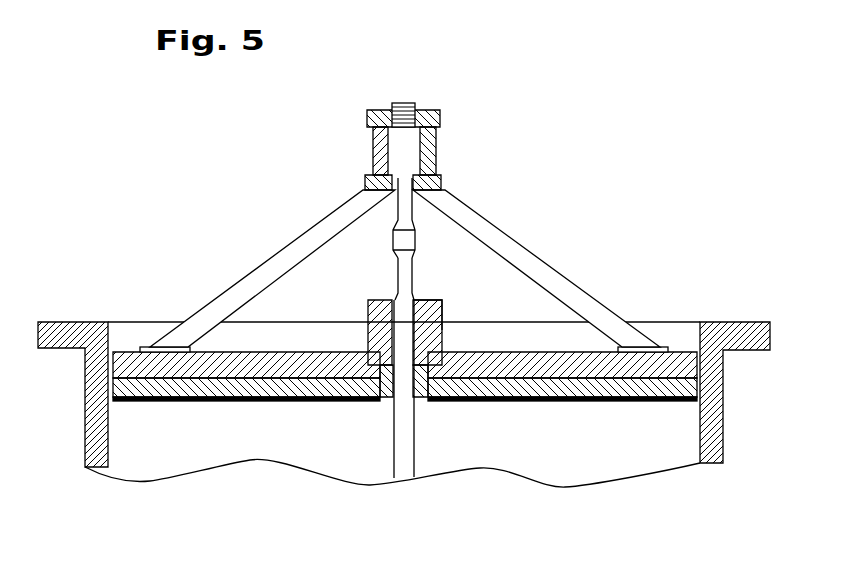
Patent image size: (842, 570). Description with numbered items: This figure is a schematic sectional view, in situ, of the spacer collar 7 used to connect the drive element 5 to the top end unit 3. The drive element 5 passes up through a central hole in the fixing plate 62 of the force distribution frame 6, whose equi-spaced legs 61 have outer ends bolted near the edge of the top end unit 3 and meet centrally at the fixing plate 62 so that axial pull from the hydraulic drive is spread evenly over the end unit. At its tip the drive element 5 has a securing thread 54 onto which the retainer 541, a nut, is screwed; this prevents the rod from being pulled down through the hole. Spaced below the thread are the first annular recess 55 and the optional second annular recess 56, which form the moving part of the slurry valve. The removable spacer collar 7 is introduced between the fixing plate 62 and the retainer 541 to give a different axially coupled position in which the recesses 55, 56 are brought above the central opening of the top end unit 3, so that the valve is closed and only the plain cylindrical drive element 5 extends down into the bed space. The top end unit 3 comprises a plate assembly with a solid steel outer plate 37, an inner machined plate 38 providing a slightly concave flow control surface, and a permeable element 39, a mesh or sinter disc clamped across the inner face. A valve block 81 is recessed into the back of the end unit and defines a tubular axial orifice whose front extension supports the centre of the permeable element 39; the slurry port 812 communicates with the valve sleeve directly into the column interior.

The top end unit 3 is at (270, 345).
The drive element 5 is at (403, 438).
The frame 6 is at (245, 232).
The spacer collar 7 is at (373, 152).
The outer plate 37 is at (592, 362).
The inner machined plate 38 is at (210, 386).
The permeable element 39 is at (582, 401).
The securing thread 54 is at (402, 103).
The first annular recess 55 is at (403, 200).
The second annular recess 56 is at (403, 278).
The legs 61 is at (305, 237).
The fixing plate 62 is at (441, 183).
The valve block 81 is at (432, 302).
The slurry port 812 is at (442, 318).
The retainer 541 is at (440, 118).